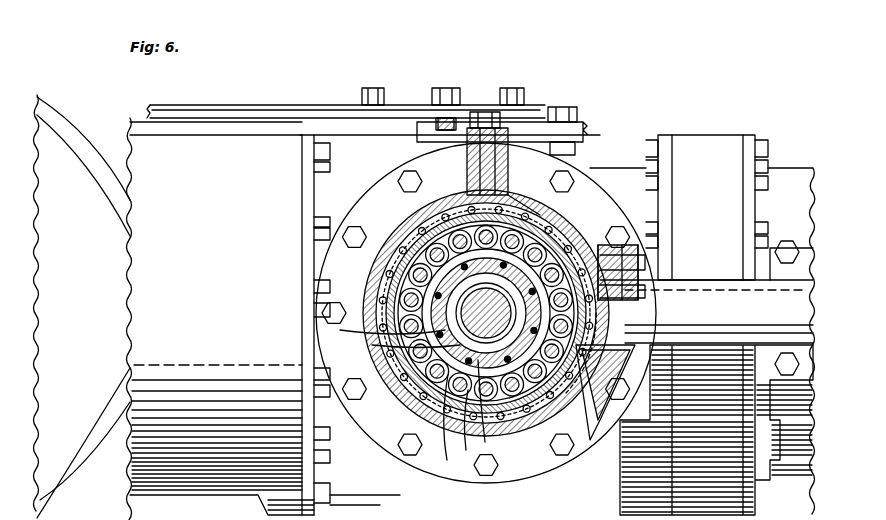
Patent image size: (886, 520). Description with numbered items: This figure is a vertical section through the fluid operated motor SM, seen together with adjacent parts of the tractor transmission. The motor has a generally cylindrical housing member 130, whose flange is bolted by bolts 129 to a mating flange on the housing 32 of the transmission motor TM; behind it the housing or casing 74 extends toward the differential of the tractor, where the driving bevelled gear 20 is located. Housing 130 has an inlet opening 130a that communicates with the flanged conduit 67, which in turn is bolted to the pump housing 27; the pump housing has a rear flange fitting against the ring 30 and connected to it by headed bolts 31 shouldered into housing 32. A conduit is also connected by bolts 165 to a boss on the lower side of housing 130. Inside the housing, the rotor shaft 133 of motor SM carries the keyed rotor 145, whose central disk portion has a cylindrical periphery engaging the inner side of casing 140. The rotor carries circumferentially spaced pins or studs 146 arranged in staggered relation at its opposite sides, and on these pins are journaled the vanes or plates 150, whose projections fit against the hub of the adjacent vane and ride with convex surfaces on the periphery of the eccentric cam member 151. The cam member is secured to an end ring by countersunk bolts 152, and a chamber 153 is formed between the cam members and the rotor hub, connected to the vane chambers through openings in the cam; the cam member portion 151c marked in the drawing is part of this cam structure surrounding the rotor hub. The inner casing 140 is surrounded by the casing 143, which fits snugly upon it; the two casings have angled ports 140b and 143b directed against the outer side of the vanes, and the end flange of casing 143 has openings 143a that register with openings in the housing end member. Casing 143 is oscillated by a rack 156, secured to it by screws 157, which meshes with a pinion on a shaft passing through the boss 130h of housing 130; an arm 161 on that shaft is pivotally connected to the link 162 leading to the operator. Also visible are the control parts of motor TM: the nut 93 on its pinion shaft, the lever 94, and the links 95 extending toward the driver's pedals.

The driving bevelled gear 20 is at (70, 470).
The housing or casing 74 is at (188, 488).
The links 95 is at (258, 112).
The arm 161 is at (585, 131).
The lever 94 is at (398, 105).
The nut 93 is at (446, 88).
The link 162 is at (545, 108).
The bolts 129 is at (352, 248).
The openings 143a is at (416, 222).
The screws 157 is at (458, 218).
The casing 143 is at (420, 395).
The ports 143b is at (572, 388).
The shaft 133 is at (372, 331).
The rotor 145 is at (408, 340).
The casing 140 is at (372, 366).
The ports 140b is at (600, 400).
The hub ring 151c is at (494, 296).
The cam member 151 is at (472, 300).
The boss 130h is at (502, 160).
The vanes or plates 150 is at (462, 200).
The rack 156 is at (540, 215).
The pins or studs 146 is at (445, 422).
The bolts 152 is at (461, 422).
The chamber 153 is at (490, 404).
The housing member 130 is at (606, 242).
The inlet opening 130a is at (625, 306).
The bolts 31 is at (652, 135).
The ring 30 is at (718, 143).
The pump housing 27 is at (790, 180).
The conduit 67 is at (710, 300).
The bolts 165 is at (668, 262).
The housing 32 is at (362, 478).